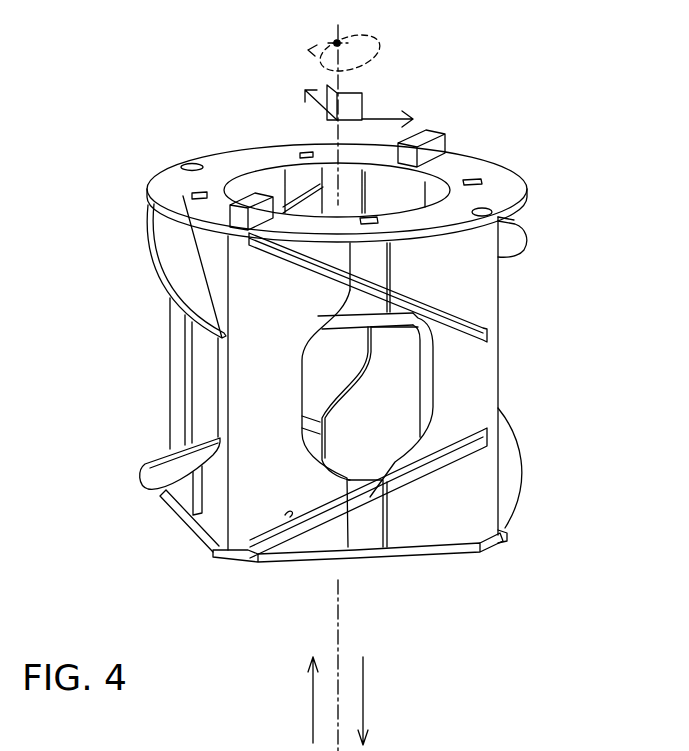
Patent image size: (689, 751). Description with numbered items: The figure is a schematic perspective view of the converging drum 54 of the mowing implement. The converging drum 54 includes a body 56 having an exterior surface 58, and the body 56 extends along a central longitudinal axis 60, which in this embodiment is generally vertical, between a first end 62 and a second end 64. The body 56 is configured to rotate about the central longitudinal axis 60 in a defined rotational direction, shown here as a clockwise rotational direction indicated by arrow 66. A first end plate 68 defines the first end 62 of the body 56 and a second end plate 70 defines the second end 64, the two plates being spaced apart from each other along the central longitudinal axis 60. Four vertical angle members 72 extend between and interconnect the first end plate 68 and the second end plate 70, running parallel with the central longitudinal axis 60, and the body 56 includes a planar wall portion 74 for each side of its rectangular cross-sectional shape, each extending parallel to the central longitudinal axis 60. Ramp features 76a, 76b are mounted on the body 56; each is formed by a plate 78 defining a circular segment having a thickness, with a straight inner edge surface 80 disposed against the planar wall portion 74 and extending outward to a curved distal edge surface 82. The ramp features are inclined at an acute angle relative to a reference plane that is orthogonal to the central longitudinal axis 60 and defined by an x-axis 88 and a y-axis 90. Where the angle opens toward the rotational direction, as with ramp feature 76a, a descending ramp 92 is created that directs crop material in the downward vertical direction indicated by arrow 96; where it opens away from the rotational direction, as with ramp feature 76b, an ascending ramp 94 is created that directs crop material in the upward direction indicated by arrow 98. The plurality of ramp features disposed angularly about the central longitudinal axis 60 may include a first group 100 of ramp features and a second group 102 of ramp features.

The converging drum 54 is at (472, 113).
The body 56 is at (528, 351).
The exterior surface 58 is at (285, 386).
The central longitudinal axis 60 is at (380, 52).
The first end 62 is at (422, 553).
The second end 64 is at (468, 167).
The arrow 66 is at (375, 30).
The first end plate 68 is at (195, 539).
The second end plate 70 is at (163, 220).
The vertical angle members 72 is at (177, 405).
The planar wall portion 74 is at (462, 490).
The ramp feature 76a is at (183, 315).
The ramp feature 76b is at (150, 470).
The plate 78 is at (182, 278).
The inner edge surface 80 is at (215, 172).
The curved distal edge surface 82 is at (152, 244).
The x-axis 88 is at (380, 120).
The y-axis 90 is at (327, 108).
The descending ramp 92 is at (188, 339).
The ascending ramp 94 is at (175, 433).
The arrow 96 is at (363, 693).
The arrow 98 is at (310, 705).
The first group 100 is at (152, 220).
The second group 102 is at (155, 492).